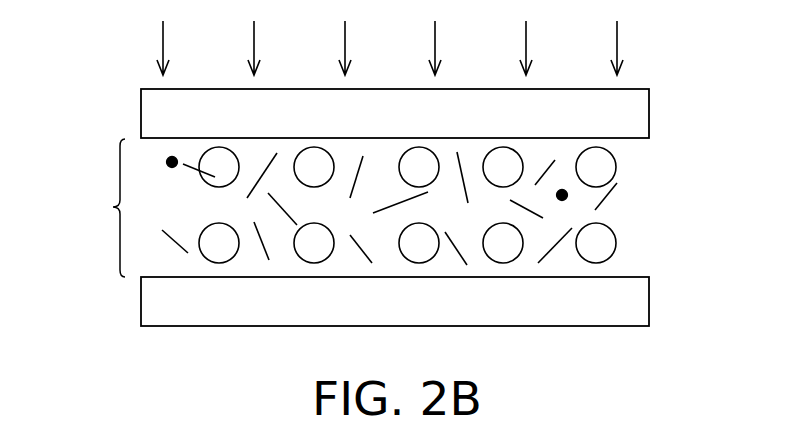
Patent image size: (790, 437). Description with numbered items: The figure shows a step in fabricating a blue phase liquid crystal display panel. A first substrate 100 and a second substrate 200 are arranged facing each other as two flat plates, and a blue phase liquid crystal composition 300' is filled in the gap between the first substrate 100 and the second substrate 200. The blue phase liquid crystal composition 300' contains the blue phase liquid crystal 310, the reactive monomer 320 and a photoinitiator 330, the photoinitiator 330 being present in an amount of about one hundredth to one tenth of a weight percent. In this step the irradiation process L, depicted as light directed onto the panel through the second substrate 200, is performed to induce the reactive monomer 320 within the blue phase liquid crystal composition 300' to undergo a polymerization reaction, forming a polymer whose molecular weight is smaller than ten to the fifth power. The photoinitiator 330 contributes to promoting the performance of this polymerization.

The irradiation process L is at (617, 49).
The second substrate 200 is at (153, 112).
The first substrate 100 is at (153, 302).
The blue phase liquid crystal composition 300' is at (94, 208).
The blue phase liquid crystal 310 is at (602, 162).
The reactive monomer 320 is at (608, 197).
The photoinitiator 330 is at (562, 195).